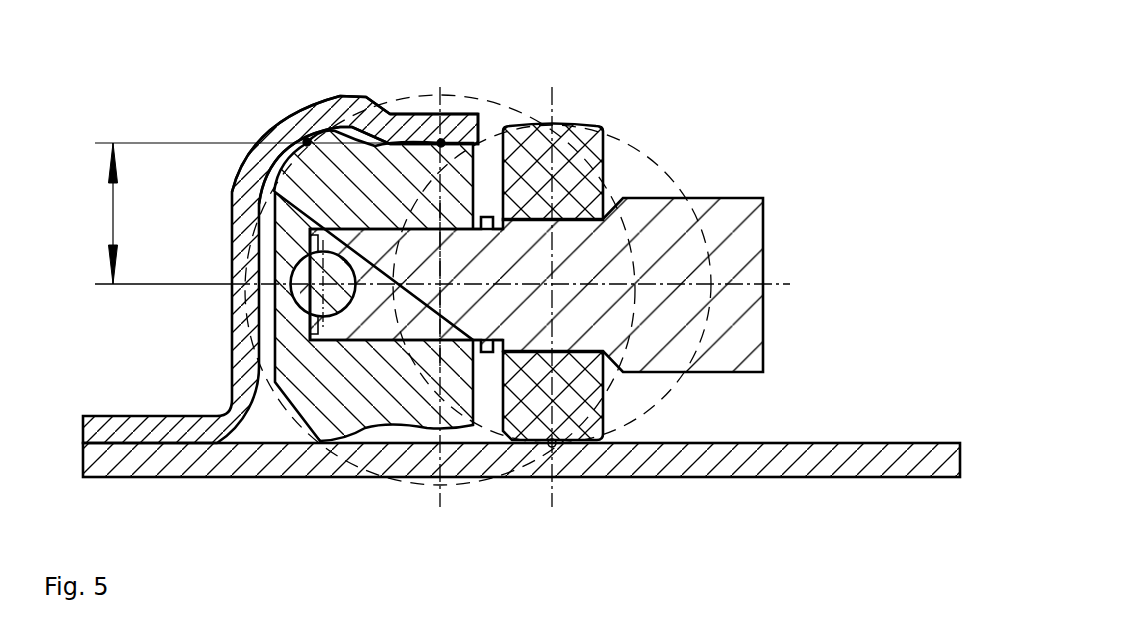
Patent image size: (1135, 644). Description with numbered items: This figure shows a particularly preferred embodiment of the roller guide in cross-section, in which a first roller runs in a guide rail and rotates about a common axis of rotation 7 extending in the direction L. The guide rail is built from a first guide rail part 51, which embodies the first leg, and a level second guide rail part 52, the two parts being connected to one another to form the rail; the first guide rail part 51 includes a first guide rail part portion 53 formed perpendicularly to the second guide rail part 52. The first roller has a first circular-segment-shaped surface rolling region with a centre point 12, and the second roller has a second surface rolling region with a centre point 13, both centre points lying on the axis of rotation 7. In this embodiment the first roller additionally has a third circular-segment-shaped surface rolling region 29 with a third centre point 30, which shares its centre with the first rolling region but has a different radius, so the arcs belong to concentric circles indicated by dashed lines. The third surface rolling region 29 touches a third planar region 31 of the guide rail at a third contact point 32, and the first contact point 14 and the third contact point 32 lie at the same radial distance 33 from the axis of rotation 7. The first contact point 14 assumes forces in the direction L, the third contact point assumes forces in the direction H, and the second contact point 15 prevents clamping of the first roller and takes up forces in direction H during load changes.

The axis of rotation 7 is at (777, 285).
The centre point of the first surface rolling region 12 is at (442, 276).
The centre point of the second surface rolling region 13 is at (551, 286).
The first contact point 14 is at (303, 138).
The second contact point 15 is at (556, 448).
The third circular-segment-shaped surface rolling region 29 is at (489, 140).
The third centre point 30 is at (443, 283).
The third planar region 31 is at (419, 112).
The third contact point 32 is at (455, 130).
The radial distance 33 is at (110, 225).
The first guide rail part 51 is at (231, 262).
The second guide rail part 52 is at (274, 143).
The first guide rail part portion 53 is at (394, 112).